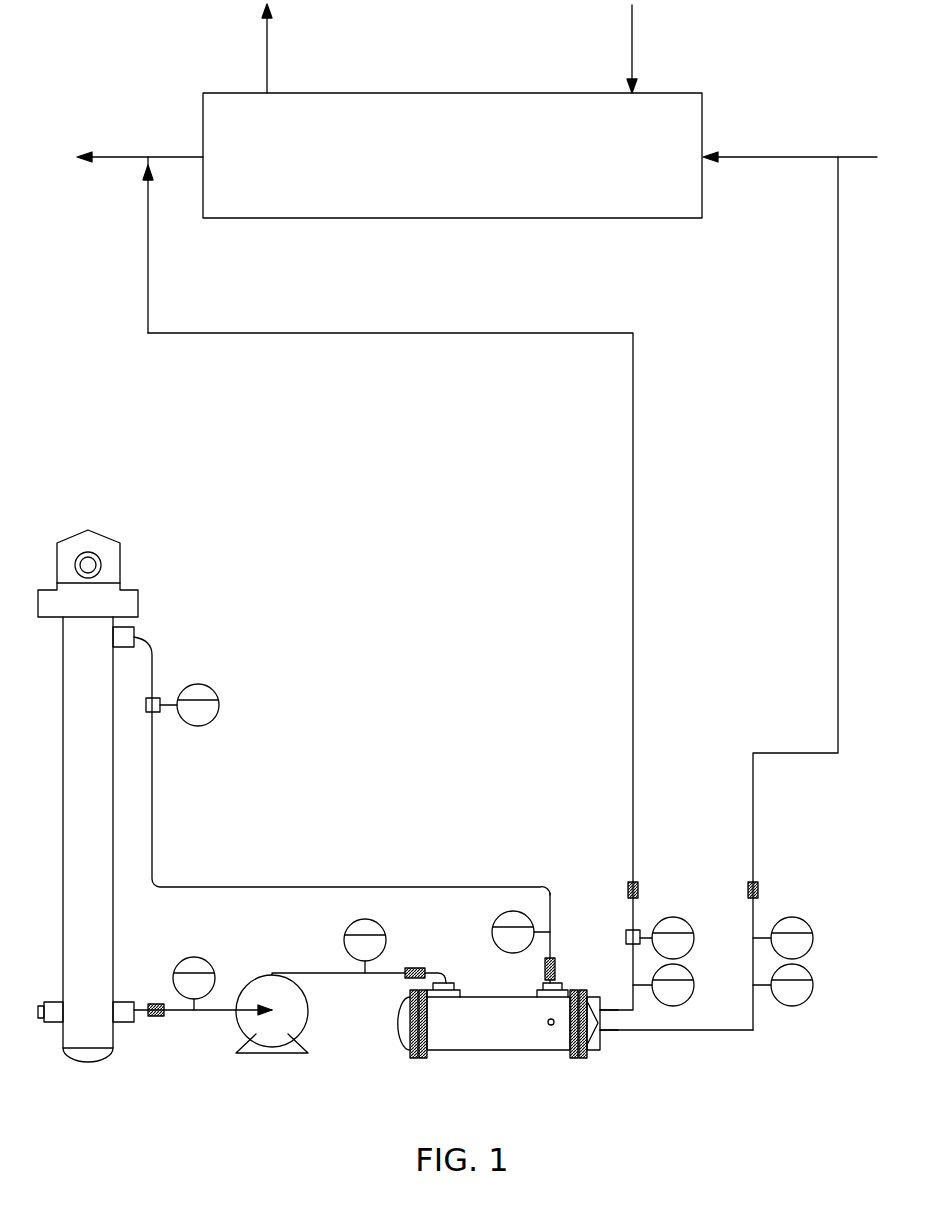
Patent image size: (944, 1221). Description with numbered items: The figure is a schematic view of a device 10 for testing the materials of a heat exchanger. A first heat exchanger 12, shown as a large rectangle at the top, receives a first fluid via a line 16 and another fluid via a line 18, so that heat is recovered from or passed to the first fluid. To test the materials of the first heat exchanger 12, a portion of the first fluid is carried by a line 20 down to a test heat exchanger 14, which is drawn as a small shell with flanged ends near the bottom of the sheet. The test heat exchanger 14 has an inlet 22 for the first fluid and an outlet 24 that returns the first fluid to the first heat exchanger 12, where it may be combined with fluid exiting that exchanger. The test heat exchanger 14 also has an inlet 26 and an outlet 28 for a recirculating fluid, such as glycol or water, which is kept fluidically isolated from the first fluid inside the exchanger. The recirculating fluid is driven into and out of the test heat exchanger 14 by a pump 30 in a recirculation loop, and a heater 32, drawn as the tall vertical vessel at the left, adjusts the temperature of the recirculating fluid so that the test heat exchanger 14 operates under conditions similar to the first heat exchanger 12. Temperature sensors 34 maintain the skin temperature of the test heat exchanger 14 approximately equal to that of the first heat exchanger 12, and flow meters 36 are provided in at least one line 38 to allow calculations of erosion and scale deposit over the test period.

The device 10 is at (200, 460).
The first heat exchanger 12 is at (478, 93).
The test heat exchanger 14 is at (508, 1043).
The line 16 is at (855, 157).
The line 18 is at (632, 52).
The line 20 is at (836, 358).
The inlet 22 is at (660, 1032).
The outlet 24 is at (620, 1000).
The inlet 26 is at (458, 982).
The outlet 28 is at (553, 962).
The pump 30 is at (305, 1037).
The heater 32 is at (60, 858).
The temperature sensors 34 is at (493, 932).
The flow meters 36 is at (220, 704).
The line 38 is at (220, 887).